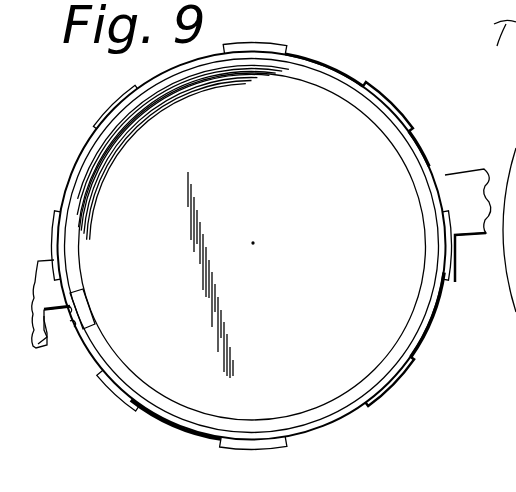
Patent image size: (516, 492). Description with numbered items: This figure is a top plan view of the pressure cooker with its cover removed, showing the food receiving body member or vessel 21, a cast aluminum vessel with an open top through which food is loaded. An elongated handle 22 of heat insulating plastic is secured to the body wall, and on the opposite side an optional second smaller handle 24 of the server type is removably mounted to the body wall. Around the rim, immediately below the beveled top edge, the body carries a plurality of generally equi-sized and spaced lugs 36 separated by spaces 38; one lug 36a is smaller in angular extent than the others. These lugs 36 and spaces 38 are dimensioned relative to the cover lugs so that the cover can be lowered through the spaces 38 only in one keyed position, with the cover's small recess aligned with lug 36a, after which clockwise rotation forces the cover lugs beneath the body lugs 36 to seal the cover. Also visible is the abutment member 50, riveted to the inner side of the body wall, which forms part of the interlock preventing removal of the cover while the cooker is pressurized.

The cooker body member 21 is at (331, 222).
The elongated handle 22 is at (462, 169).
The second smaller handle 24 is at (36, 343).
The lugs 36 is at (258, 41).
The lug 36a is at (118, 392).
The separating spaces 38 is at (329, 58).
The abutment member 50 is at (88, 308).